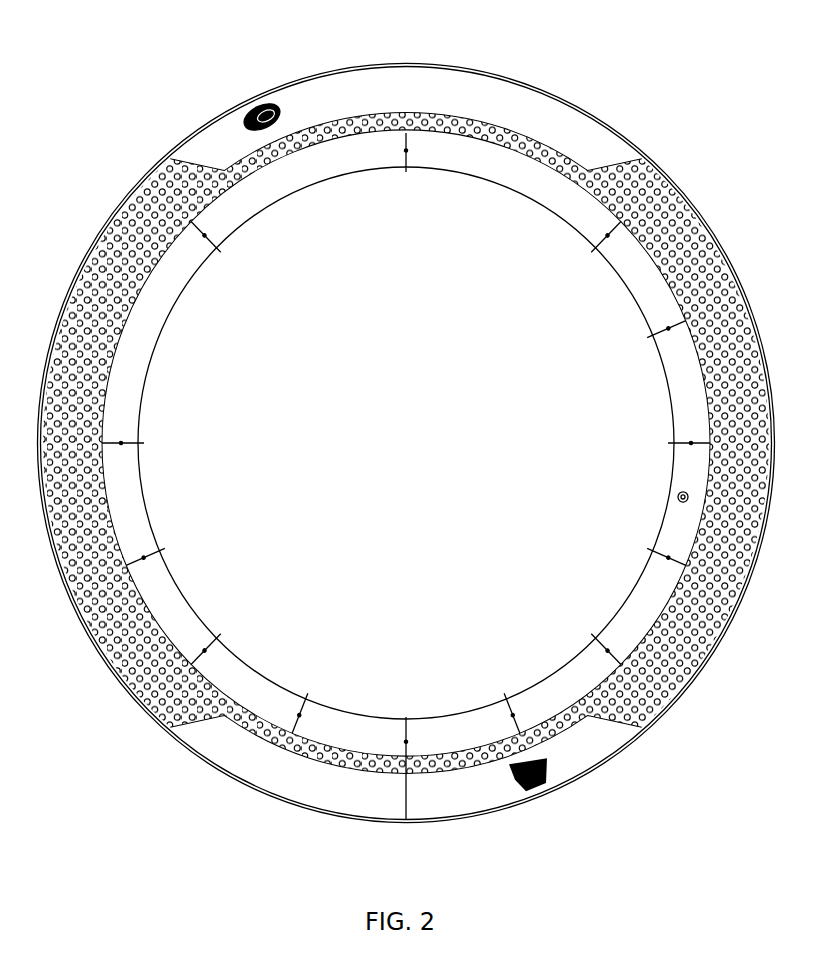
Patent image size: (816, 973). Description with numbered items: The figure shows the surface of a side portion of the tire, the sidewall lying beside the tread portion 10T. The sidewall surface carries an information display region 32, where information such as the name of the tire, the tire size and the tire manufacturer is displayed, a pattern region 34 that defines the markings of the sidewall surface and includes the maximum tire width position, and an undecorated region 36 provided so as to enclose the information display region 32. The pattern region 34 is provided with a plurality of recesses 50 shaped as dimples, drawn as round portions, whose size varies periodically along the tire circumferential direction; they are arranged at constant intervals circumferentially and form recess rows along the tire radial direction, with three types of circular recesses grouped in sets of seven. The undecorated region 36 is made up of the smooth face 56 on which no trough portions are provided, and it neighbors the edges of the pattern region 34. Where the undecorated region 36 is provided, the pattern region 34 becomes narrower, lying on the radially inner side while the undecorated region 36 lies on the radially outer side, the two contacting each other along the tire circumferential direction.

The tread portion 10T is at (646, 152).
The information display region 32 is at (366, 80).
The pattern region 34 is at (124, 188).
The undecorated region 36 is at (207, 140).
The recesses 50 is at (167, 165).
The smooth face 56 is at (470, 80).